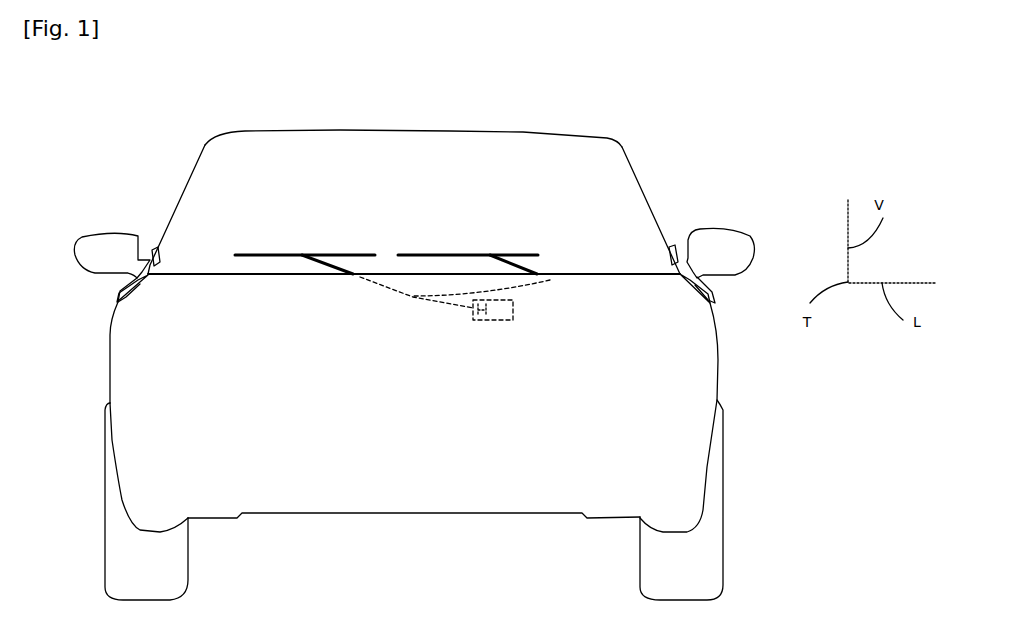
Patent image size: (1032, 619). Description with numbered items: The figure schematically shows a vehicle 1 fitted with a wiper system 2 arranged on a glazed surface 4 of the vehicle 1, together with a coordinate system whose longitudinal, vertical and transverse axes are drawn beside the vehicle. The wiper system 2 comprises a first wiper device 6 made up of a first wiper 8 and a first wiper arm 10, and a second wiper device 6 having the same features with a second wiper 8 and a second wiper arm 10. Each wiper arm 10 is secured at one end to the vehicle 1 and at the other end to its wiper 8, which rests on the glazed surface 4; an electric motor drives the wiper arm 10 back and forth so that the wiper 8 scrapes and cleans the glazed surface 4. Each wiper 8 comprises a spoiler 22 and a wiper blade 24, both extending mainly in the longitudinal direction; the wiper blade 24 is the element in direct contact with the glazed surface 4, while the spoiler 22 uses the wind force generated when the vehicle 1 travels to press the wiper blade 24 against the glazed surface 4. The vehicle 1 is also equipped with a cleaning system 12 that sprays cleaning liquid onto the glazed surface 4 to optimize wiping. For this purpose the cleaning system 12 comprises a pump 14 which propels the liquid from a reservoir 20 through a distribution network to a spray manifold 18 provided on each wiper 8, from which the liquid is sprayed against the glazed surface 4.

The vehicle 1 is at (70, 192).
The wiper system 2 is at (523, 262).
The glazed surface 4 is at (630, 217).
The wiper device 6 is at (494, 251).
The wiper 8 is at (437, 253).
The wiper arm 10 is at (536, 250).
The cleaning system 12 is at (528, 310).
The pump 14 is at (498, 320).
The spray manifold 18 is at (273, 253).
The reservoir 20 is at (392, 288).
The spoiler 22 is at (247, 256).
The wiper blade 24 is at (345, 252).